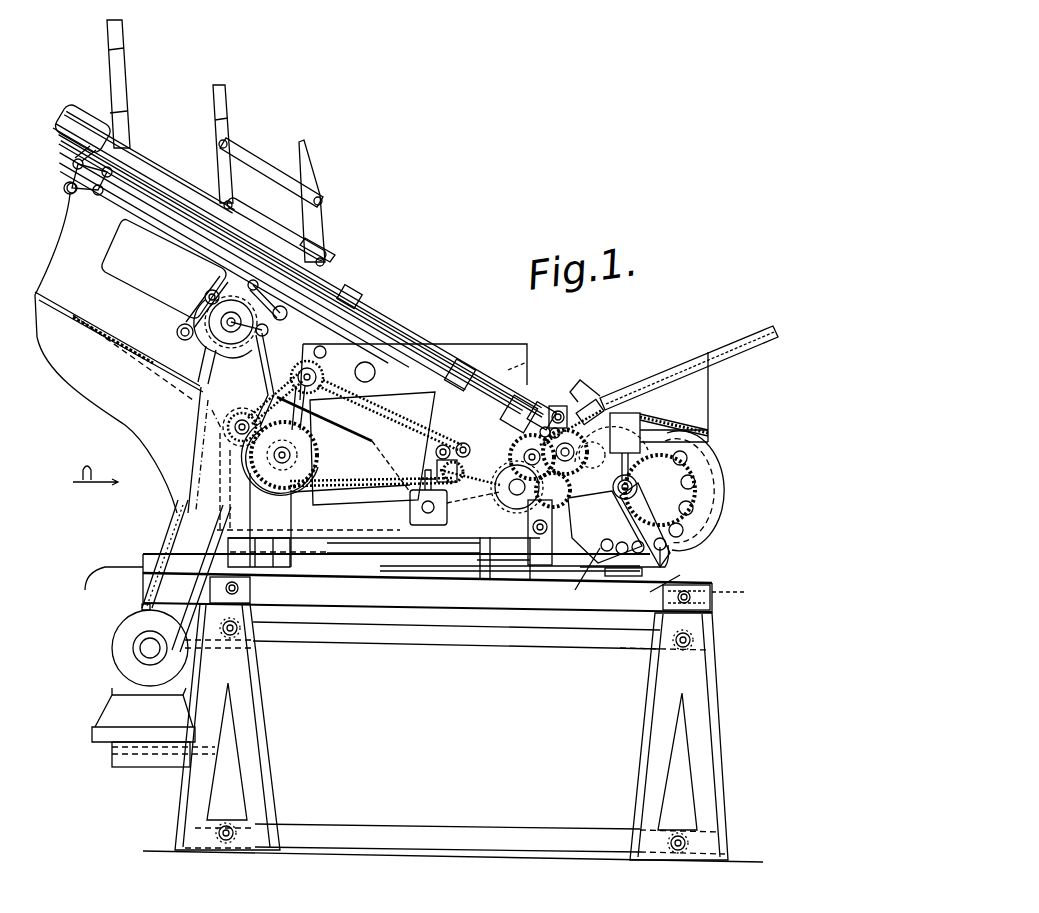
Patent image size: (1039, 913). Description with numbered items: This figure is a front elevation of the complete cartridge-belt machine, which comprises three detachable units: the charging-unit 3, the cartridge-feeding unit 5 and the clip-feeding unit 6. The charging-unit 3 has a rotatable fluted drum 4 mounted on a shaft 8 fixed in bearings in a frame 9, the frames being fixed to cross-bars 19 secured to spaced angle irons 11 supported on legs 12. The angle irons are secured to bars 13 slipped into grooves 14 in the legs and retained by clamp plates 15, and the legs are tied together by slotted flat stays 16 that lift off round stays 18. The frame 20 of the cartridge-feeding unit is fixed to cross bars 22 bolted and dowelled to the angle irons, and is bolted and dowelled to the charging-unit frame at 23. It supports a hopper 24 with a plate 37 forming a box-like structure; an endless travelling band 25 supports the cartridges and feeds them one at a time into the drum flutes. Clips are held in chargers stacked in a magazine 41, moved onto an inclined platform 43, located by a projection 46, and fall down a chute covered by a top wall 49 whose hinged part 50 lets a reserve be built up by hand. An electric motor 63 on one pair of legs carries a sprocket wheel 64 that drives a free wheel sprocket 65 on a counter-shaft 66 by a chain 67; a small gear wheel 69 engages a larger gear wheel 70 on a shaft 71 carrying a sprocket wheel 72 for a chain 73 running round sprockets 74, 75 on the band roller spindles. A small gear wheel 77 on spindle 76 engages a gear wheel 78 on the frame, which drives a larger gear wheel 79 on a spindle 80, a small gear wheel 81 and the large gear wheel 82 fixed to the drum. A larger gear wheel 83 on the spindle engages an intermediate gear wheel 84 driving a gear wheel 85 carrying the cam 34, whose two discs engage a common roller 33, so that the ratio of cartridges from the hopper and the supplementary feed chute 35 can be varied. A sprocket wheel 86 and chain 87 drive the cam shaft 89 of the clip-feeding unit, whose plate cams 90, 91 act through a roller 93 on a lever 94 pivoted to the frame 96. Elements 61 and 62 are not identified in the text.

The charging-unit 3 is at (708, 466).
The rotatable fluted drum 4 is at (698, 492).
The cartridge-feeding unit 5 is at (408, 378).
The clip-feeding unit 6 is at (325, 236).
The shaft 8 is at (630, 485).
The frame 9 is at (660, 490).
The angle irons 11 is at (695, 578).
The legs 12 is at (245, 705).
The bars 13 is at (228, 594).
The grooves 14 is at (262, 575).
The clamp plates 15 is at (304, 572).
The flat stays 16 is at (437, 633).
The round stays 18 is at (232, 636).
The cross-bars 19 is at (612, 582).
The frame 20 is at (460, 530).
The cross bars 22 is at (478, 560).
The bolted and dowelled connection 23 is at (614, 487).
The hopper 24 is at (356, 433).
The endless travelling band 25 is at (371, 469).
The roller 33 is at (222, 482).
The cam 34 is at (510, 496).
The supplementary feed chute 35 is at (733, 350).
The plate 37 is at (413, 372).
The magazine 41 is at (277, 185).
The platform 43 is at (332, 266).
The projection 46 is at (398, 336).
The top wall 49 is at (425, 342).
The hinged part of top wall 50 is at (353, 289).
The hook bar 61 is at (118, 566).
The table member 62 is at (372, 570).
The electric motor 63 is at (112, 648).
The sprocket wheel 64 is at (133, 660).
The sprocket 65 is at (230, 432).
The counter-shaft 66 is at (240, 445).
The chain 67 is at (178, 528).
The small gear wheel 69 is at (244, 410).
The larger gear wheel 70 is at (312, 425).
The shaft 71 is at (284, 455).
The sprocket wheel 72 is at (304, 386).
The chain 73 is at (360, 485).
The sprocket 74 is at (320, 348).
The sprocket 75 is at (552, 410).
The band roller spindle 76 is at (463, 461).
The small gear wheel 77 is at (508, 462).
The gear wheel 78 is at (560, 430).
The larger gear wheel 79 is at (611, 451).
The spindle 80 is at (586, 400).
The small gear wheel 81 is at (640, 420).
The large gear wheel 82 is at (580, 579).
The larger gear wheel 83 is at (605, 527).
The intermediate gear wheel 84 is at (540, 566).
The gear wheel 85 is at (514, 510).
The sprocket wheel 86 is at (279, 458).
The chain 87 is at (268, 362).
The cam shaft 89 is at (259, 308).
The plate cam 90 is at (208, 334).
The plate cam 91 is at (202, 356).
The roller 93 is at (205, 295).
The lever 94 is at (177, 331).
The frame 96 is at (126, 326).